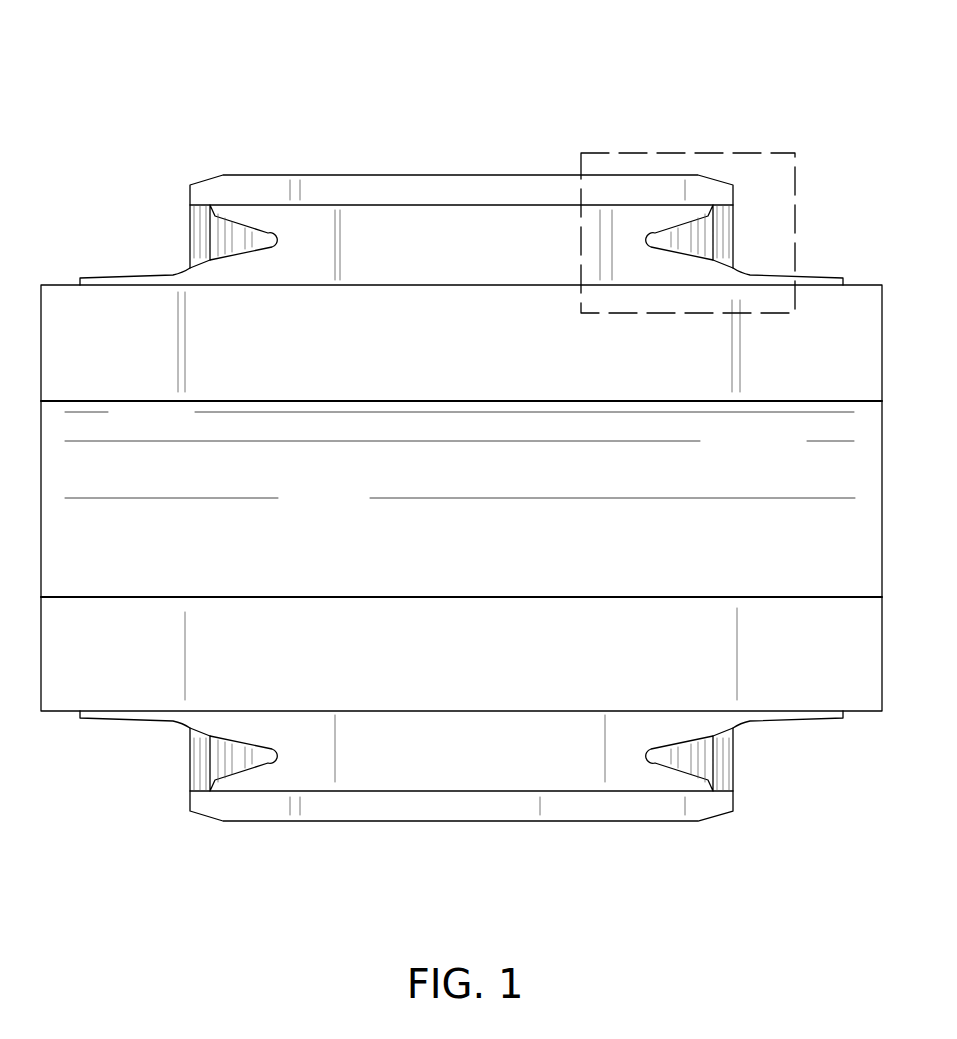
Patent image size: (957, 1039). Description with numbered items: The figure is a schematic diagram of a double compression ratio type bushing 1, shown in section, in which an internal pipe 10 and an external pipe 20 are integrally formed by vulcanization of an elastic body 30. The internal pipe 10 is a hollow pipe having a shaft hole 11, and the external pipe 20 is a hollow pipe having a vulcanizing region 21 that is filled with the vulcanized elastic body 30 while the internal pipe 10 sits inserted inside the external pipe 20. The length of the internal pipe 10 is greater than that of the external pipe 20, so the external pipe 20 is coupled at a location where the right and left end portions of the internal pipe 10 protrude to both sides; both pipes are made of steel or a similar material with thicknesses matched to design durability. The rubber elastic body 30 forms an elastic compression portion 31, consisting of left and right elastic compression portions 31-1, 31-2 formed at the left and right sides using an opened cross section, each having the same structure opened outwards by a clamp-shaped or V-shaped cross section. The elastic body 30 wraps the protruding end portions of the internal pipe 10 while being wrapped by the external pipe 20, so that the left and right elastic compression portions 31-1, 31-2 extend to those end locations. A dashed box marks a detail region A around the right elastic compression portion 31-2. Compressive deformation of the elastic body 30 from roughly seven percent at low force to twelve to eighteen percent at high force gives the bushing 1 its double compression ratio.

The bushing 1 is at (118, 172).
The internal pipe 10 is at (62, 660).
The shaft hole 11 is at (830, 541).
The external pipe 20 is at (337, 802).
The vulcanizing region 21 is at (680, 765).
The elastic body 30 is at (472, 752).
The elastic compression portion 31 is at (510, 58).
The left elastic compression portion 31-1 is at (267, 233).
The right elastic compression portion 31-2 is at (656, 233).
The detail region A is at (770, 153).